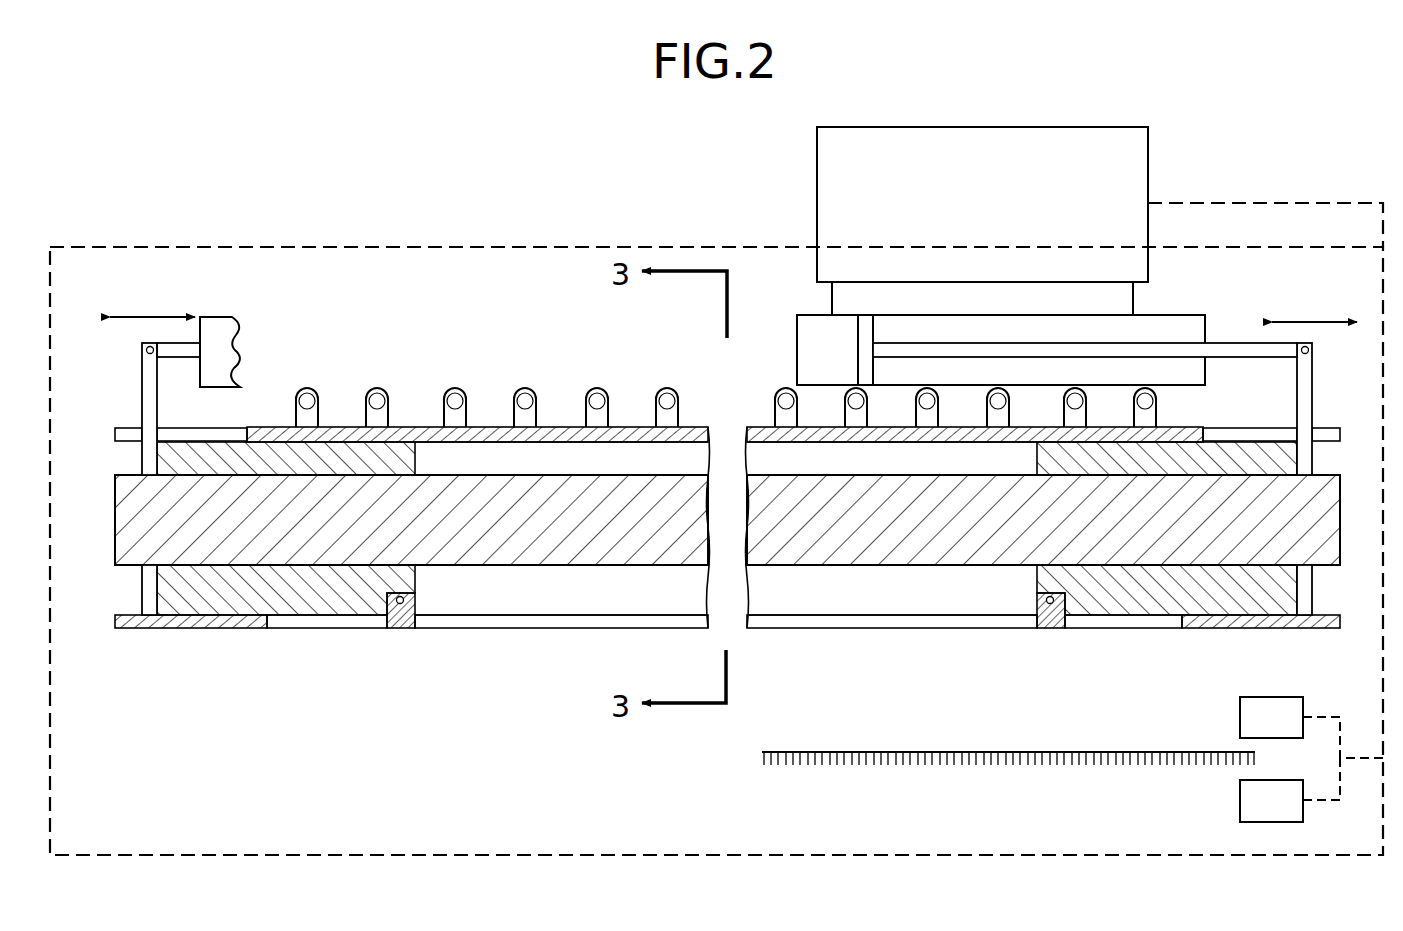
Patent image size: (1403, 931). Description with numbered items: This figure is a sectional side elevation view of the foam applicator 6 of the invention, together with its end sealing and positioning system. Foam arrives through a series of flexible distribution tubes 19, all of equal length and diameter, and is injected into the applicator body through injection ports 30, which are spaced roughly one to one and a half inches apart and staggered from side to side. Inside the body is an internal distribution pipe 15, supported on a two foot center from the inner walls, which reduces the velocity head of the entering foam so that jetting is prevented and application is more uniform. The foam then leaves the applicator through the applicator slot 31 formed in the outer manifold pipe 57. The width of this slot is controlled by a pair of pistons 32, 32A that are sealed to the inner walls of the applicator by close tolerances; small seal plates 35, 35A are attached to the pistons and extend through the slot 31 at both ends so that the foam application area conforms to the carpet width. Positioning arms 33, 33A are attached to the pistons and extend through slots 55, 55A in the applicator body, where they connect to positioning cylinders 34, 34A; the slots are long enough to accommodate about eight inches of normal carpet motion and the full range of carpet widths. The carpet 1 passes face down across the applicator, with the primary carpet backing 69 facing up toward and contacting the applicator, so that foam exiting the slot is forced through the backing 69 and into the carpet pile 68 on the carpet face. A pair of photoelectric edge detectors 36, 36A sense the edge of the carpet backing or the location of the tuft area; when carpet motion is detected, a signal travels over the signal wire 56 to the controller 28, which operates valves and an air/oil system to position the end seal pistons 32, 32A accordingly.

The carpet 1 is at (989, 765).
The foam applicator 6 is at (121, 267).
The internal distribution pipe 15 is at (136, 497).
The distribution tubes 19 is at (307, 380).
The controller 28 is at (1135, 127).
The injection ports 30 is at (292, 432).
The applicator slot 31 is at (320, 628).
The piston 32 is at (200, 598).
The piston 32A is at (1130, 598).
The positioning arm 33 is at (142, 372).
The positioning arm 33A is at (1312, 372).
The positioning cylinder 34 is at (212, 316).
The positioning cylinder 34A is at (812, 315).
The seal plate 35 is at (405, 628).
The seal plate 35A is at (1048, 628).
The photo electric edge detector 36 is at (1265, 697).
The photo electric edge detector 36A is at (1268, 822).
The slot 55 is at (137, 428).
The slot 55A is at (1318, 428).
The signal wire 56 is at (1243, 203).
The outer manifold pipe 57 is at (145, 628).
The carpet pile 68 is at (1100, 766).
The primary carpet backing 69 is at (1060, 751).